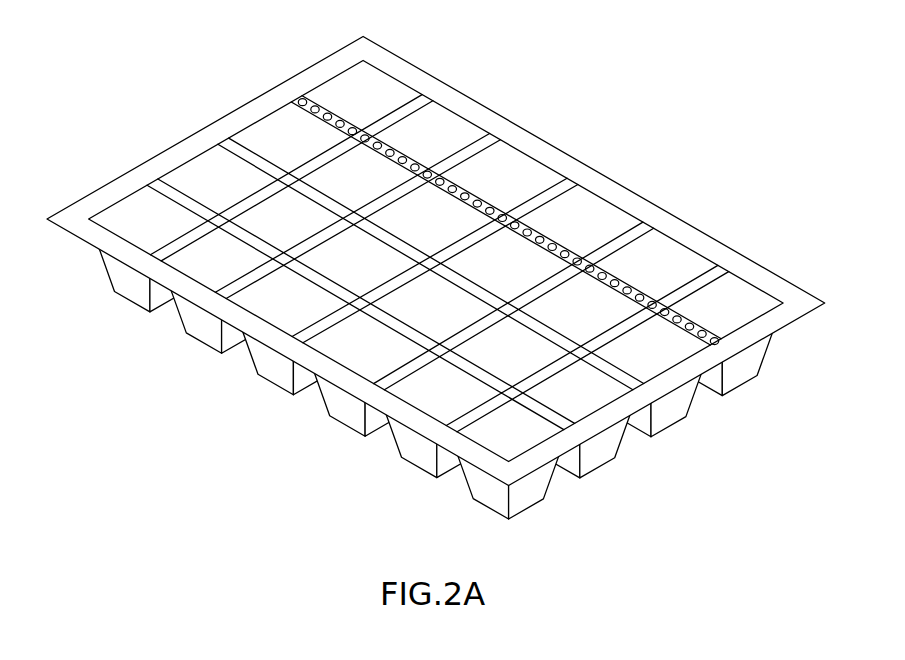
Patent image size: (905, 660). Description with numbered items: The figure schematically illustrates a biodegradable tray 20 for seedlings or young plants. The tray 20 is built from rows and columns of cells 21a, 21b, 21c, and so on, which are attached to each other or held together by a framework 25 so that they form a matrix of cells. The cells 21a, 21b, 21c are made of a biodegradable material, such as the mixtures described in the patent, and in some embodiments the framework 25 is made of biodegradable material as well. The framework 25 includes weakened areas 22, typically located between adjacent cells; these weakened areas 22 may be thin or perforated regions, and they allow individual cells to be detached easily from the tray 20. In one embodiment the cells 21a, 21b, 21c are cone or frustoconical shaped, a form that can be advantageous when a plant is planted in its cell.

The biodegradable tray 20 is at (712, 180).
The cell 21a is at (128, 284).
The cell 21b is at (198, 323).
The cell 21c is at (200, 178).
The weakened areas 22 is at (731, 338).
The framework 25 is at (757, 273).